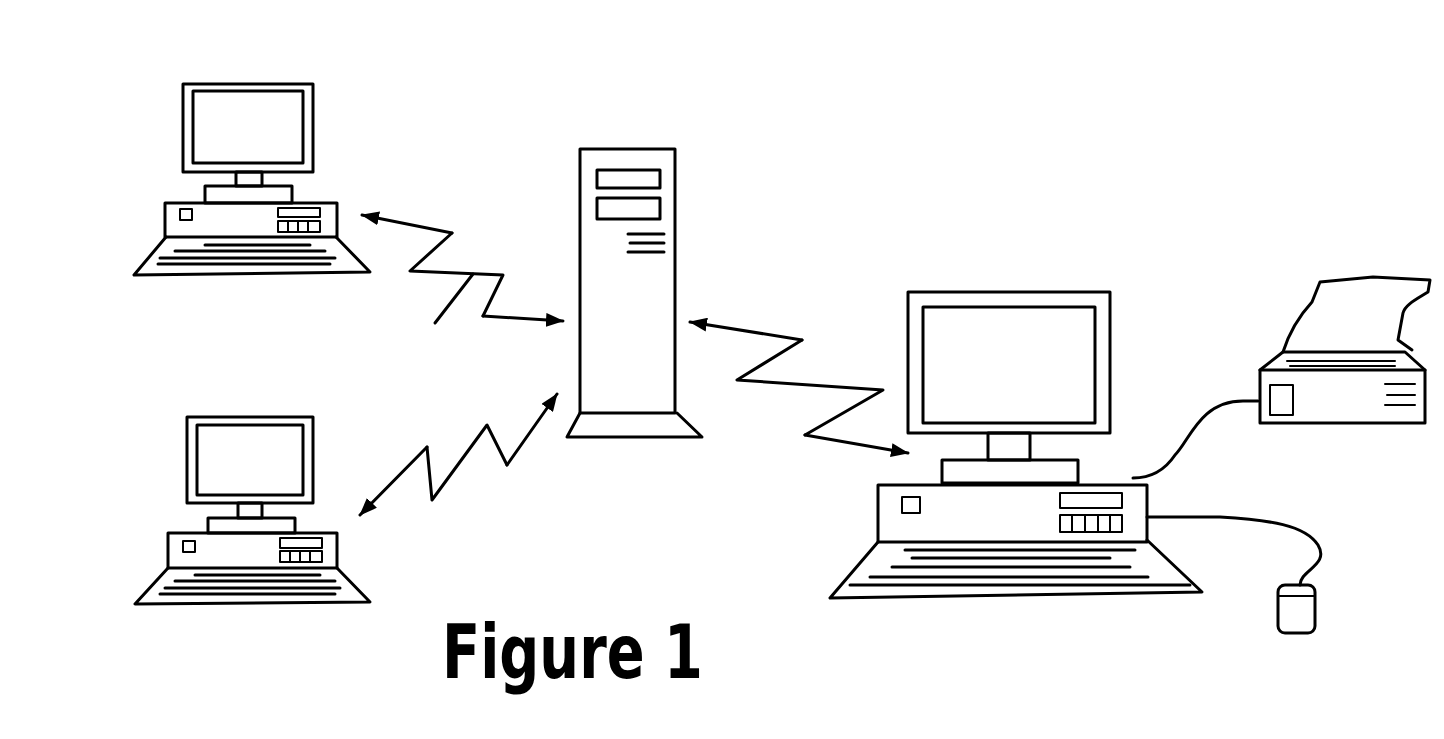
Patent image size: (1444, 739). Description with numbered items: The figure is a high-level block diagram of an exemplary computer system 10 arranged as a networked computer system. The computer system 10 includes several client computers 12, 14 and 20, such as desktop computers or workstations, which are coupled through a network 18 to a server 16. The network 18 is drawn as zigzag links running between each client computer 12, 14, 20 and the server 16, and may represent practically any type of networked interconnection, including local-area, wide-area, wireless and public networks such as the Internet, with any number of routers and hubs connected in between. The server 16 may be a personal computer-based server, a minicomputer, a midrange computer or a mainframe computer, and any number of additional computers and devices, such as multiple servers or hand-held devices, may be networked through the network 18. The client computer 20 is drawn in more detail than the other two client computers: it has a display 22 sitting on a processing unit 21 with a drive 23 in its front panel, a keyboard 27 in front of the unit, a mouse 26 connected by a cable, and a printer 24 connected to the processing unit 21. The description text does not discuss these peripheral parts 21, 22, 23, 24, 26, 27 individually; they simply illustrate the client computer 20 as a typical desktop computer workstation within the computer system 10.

The computer system 10 is at (884, 156).
The client computer 12 is at (186, 114).
The client computer 14 is at (188, 424).
The server 16 is at (607, 148).
The network 18 is at (486, 426).
The client computer 20 is at (1096, 288).
The processing unit 21 is at (891, 525).
The display 22 is at (961, 300).
The disk drive 23 is at (1086, 530).
The printer 24 is at (1282, 366).
The mouse 26 is at (1314, 618).
The keyboard 27 is at (860, 593).